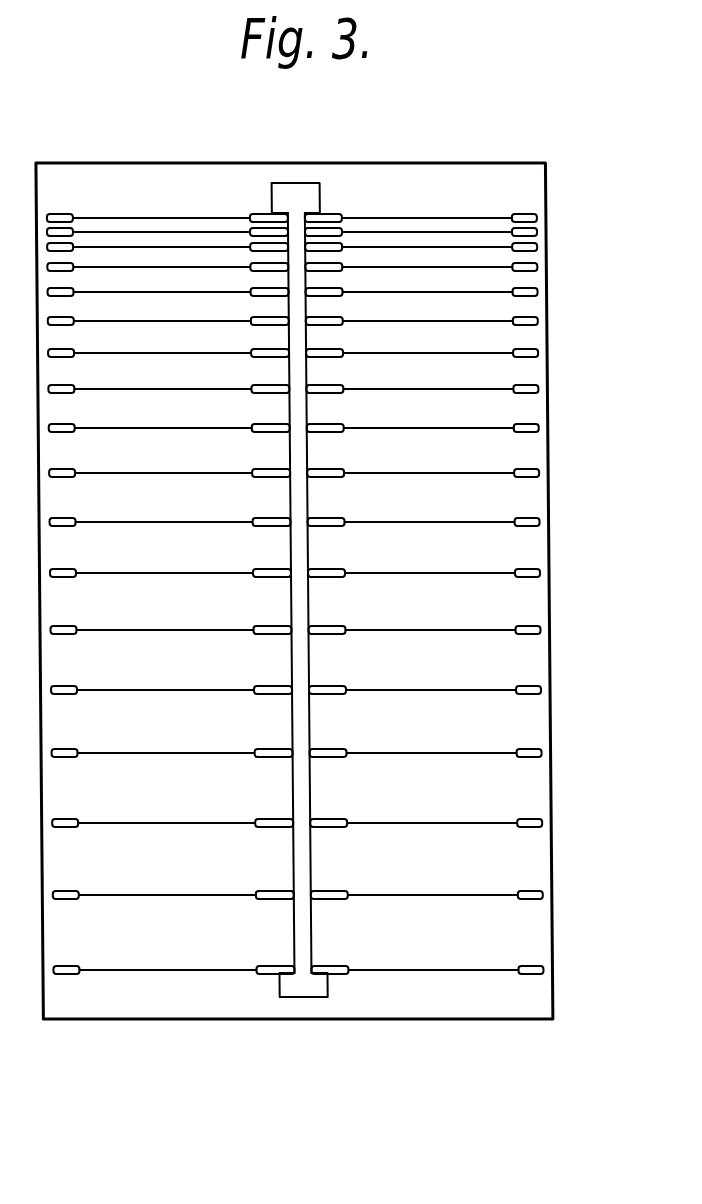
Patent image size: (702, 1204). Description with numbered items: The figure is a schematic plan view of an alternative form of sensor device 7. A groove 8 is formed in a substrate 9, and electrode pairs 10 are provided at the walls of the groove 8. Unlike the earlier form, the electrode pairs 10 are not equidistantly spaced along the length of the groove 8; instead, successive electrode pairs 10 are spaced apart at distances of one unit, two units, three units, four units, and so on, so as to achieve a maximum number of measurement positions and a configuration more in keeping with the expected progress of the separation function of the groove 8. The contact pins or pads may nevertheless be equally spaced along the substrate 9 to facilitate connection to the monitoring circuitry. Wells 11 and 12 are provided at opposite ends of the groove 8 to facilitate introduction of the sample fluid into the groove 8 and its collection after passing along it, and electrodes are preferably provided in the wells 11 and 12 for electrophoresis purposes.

The sensor device 7 is at (334, 592).
The groove 8 is at (291, 240).
The substrate 9 is at (181, 163).
The electrode pairs 10 is at (303, 1032).
The well 11 is at (320, 193).
The well 12 is at (330, 975).